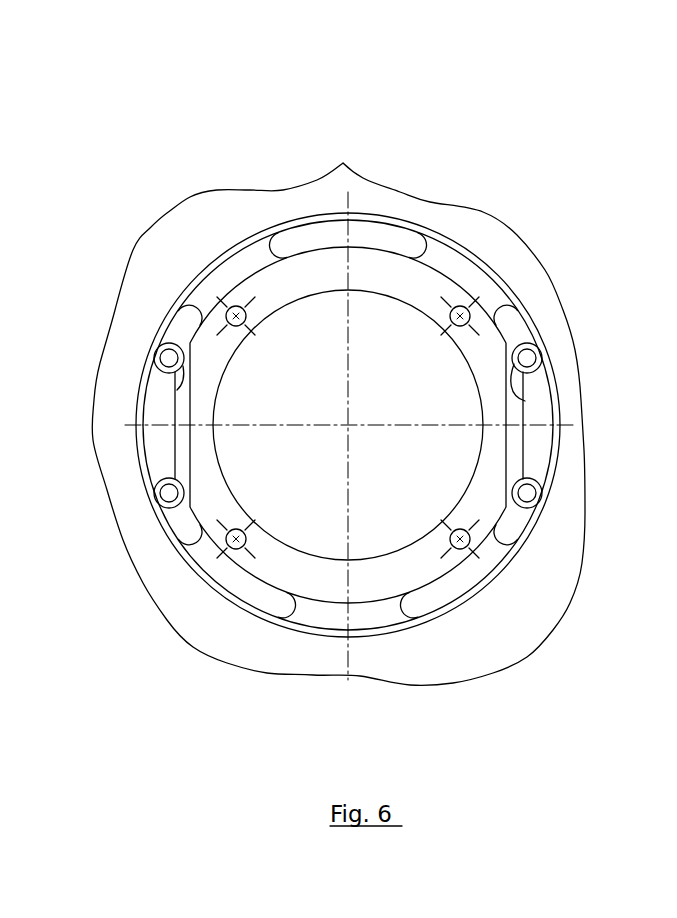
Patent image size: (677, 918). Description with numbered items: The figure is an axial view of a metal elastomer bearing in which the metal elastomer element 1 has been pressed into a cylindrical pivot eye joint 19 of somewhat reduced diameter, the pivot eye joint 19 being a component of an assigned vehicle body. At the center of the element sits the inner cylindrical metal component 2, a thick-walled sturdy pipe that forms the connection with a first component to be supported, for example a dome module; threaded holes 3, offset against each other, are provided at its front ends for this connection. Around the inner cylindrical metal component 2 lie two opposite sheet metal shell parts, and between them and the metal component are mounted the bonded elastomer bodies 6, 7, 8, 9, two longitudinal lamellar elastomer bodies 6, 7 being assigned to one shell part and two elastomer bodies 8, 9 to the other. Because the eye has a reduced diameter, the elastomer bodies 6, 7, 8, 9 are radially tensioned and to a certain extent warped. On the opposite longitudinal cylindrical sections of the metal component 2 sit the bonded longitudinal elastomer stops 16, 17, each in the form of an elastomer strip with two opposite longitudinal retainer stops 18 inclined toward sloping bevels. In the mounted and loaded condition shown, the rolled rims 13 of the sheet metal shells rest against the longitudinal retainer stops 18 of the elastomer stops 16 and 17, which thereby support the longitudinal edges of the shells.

The metal elastomer element 1 is at (389, 210).
The inner cylindrical metal component 2 is at (313, 263).
The threaded holes 3 is at (461, 312).
The elastomer body 6 is at (220, 275).
The elastomer body 7 is at (436, 252).
The elastomer body 8 is at (237, 582).
The elastomer body 9 is at (463, 582).
The rolled rim 13 is at (531, 357).
The elastomer stop 16 is at (184, 455).
The elastomer stop 17 is at (516, 462).
The longitudinal retainer stop 18 is at (525, 401).
The pivot eye joint 19 is at (250, 641).